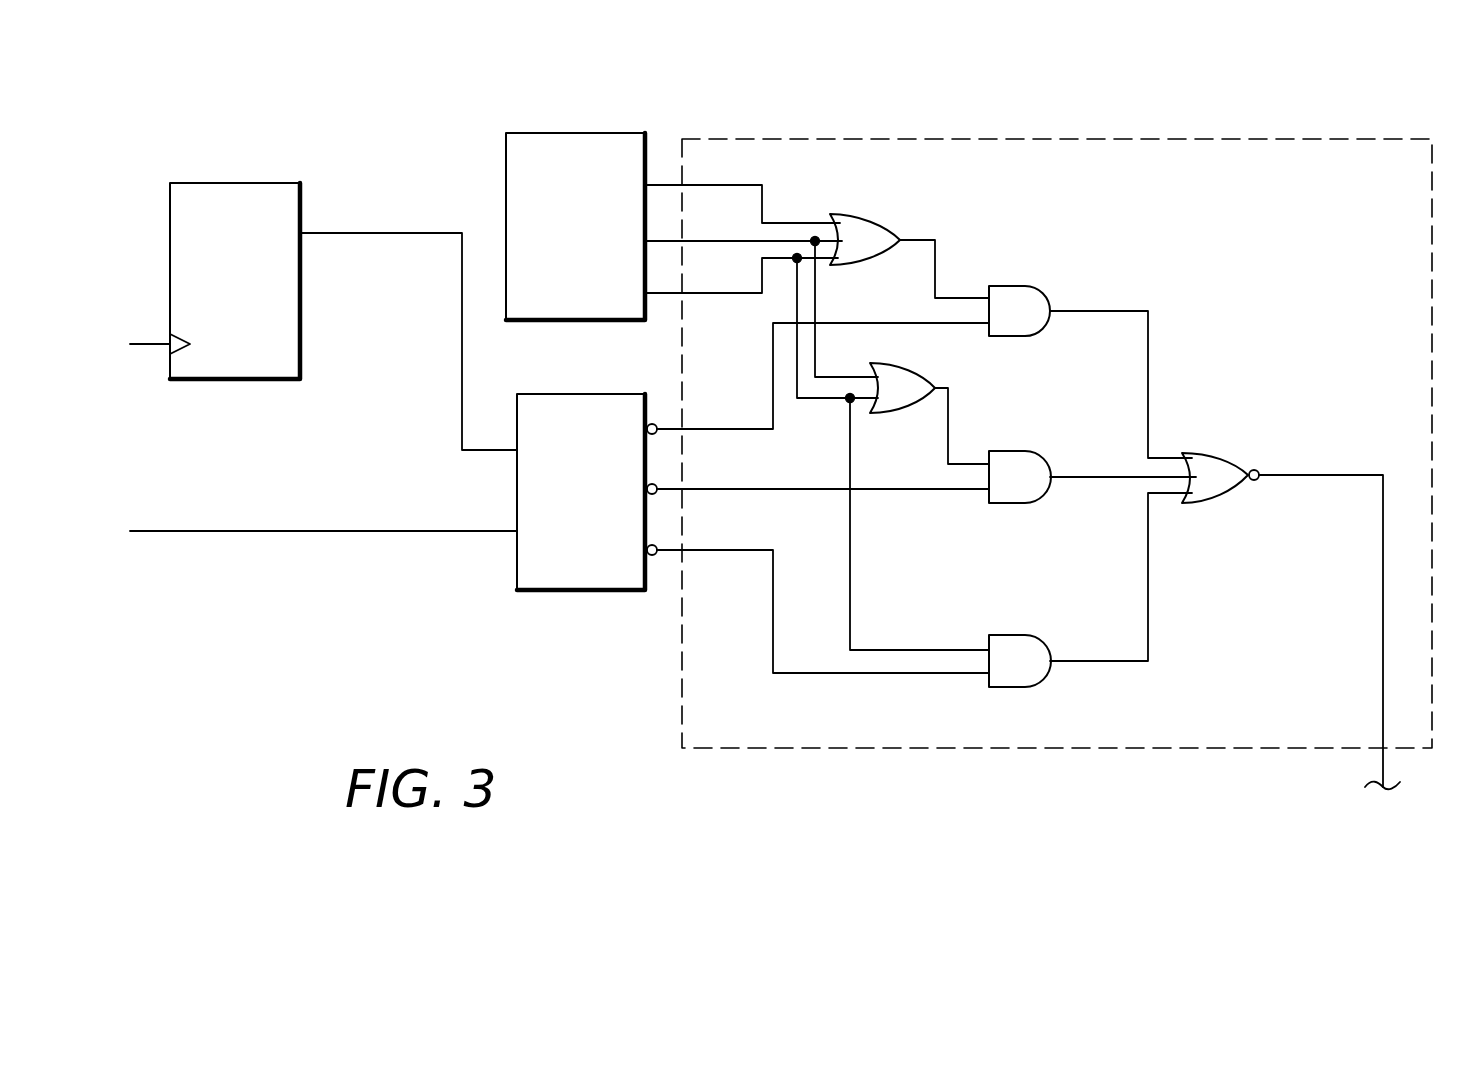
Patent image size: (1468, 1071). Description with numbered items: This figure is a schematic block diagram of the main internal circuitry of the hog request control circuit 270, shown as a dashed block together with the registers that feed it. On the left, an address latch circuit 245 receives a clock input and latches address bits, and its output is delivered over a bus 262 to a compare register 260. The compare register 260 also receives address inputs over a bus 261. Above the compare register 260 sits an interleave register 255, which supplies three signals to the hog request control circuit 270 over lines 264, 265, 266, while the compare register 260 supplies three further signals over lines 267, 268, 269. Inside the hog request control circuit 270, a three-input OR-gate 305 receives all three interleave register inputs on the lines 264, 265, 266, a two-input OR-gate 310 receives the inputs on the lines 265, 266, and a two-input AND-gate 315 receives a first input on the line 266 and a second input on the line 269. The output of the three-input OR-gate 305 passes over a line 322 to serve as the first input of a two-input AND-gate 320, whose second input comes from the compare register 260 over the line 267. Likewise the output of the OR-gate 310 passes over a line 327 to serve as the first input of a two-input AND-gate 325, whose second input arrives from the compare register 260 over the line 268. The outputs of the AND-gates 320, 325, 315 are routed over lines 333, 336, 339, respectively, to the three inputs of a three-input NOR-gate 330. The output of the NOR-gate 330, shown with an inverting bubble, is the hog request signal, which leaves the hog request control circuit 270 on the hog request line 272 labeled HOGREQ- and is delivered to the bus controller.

The address latch circuit 245 is at (266, 184).
The interleave register 255 is at (590, 133).
The compare register 260 is at (572, 394).
The bus 261 is at (234, 531).
The bus 262 is at (398, 233).
The line 264 is at (675, 185).
The line 265 is at (675, 241).
The line 266 is at (675, 293).
The line 267 is at (727, 428).
The line 268 is at (718, 489).
The line 269 is at (730, 550).
The hog request control circuit 270 is at (1325, 110).
The hog request line 272 is at (1383, 558).
The three-input OR-gate 305 is at (865, 216).
The two-input OR-gate 310 is at (905, 368).
The two-input AND-gate 315 is at (1014, 640).
The two-input AND-gate 320 is at (1024, 292).
The line 322 is at (925, 240).
The two-input AND-gate 325 is at (1011, 446).
The line 327 is at (948, 422).
The three-input NOR-gate 330 is at (1206, 456).
The line 333 is at (1149, 348).
The line 336 is at (1100, 480).
The line 339 is at (1149, 575).